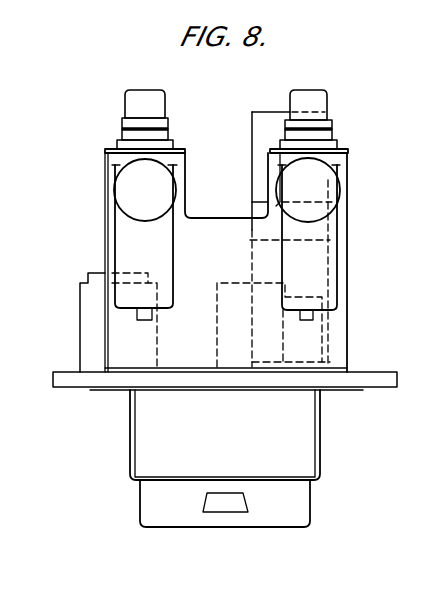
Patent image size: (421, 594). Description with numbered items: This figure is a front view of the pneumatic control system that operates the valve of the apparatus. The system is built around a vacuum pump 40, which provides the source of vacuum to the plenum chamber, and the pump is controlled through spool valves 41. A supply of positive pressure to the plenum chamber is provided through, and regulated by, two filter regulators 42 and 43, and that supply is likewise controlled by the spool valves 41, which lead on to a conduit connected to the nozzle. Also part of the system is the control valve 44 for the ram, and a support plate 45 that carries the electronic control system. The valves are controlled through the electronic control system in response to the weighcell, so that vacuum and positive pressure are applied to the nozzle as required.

The vacuum pump 40 is at (315, 338).
The spool valves 41 is at (258, 122).
The filter regulator 42 is at (308, 95).
The filter regulator 43 is at (140, 95).
The control valve 44 is at (87, 310).
The support plate 45 is at (147, 456).